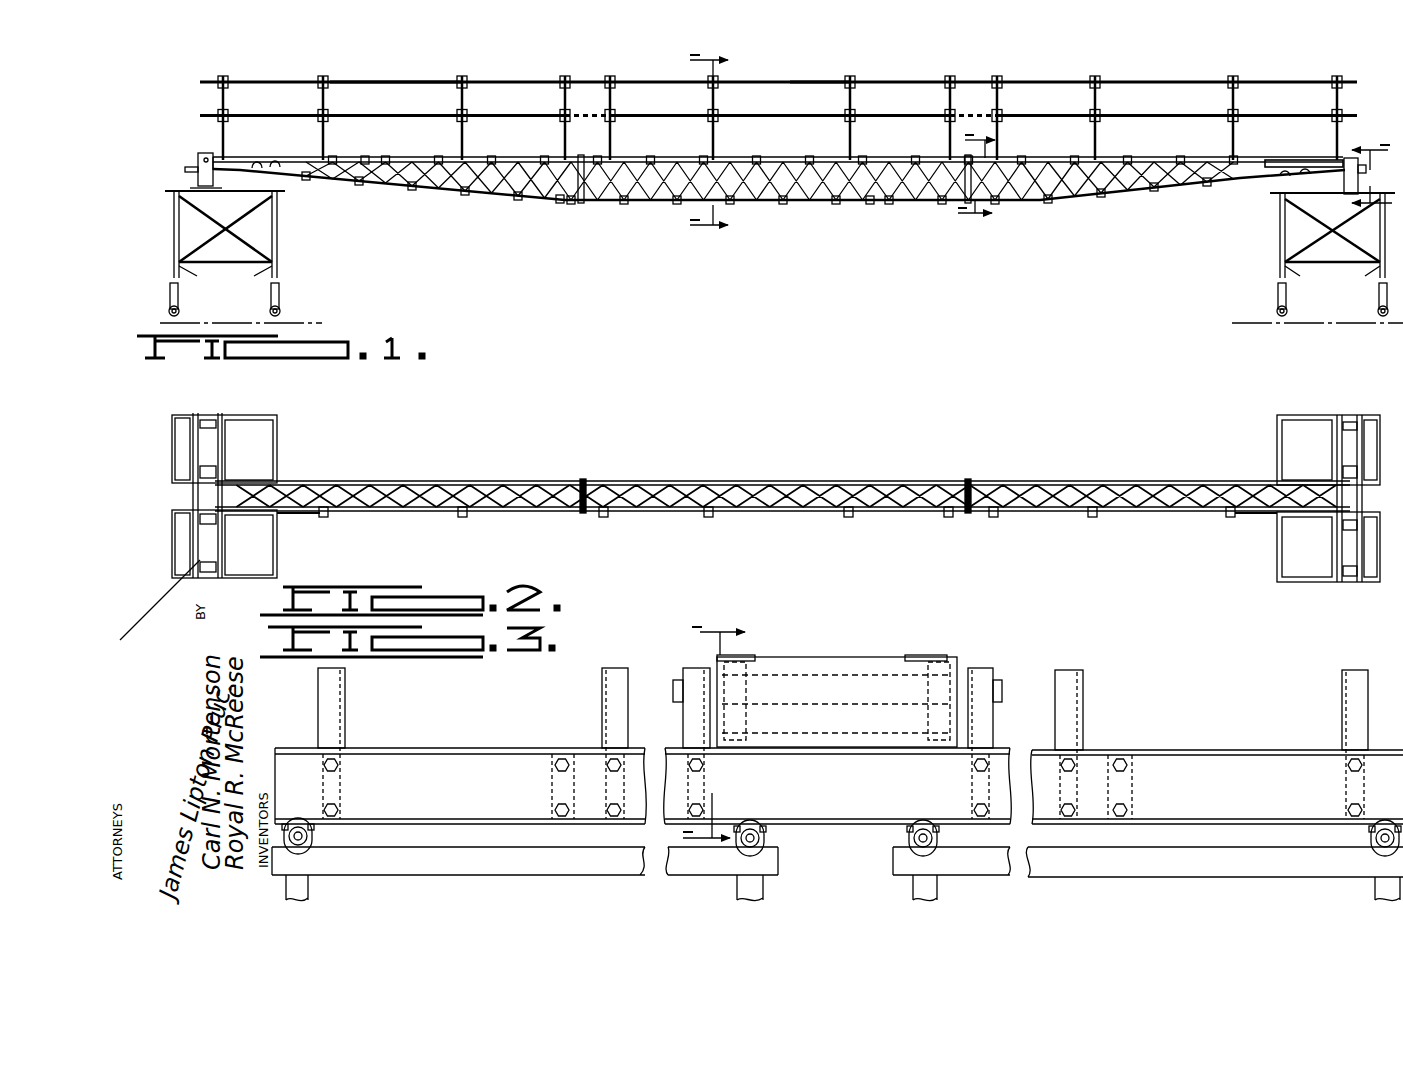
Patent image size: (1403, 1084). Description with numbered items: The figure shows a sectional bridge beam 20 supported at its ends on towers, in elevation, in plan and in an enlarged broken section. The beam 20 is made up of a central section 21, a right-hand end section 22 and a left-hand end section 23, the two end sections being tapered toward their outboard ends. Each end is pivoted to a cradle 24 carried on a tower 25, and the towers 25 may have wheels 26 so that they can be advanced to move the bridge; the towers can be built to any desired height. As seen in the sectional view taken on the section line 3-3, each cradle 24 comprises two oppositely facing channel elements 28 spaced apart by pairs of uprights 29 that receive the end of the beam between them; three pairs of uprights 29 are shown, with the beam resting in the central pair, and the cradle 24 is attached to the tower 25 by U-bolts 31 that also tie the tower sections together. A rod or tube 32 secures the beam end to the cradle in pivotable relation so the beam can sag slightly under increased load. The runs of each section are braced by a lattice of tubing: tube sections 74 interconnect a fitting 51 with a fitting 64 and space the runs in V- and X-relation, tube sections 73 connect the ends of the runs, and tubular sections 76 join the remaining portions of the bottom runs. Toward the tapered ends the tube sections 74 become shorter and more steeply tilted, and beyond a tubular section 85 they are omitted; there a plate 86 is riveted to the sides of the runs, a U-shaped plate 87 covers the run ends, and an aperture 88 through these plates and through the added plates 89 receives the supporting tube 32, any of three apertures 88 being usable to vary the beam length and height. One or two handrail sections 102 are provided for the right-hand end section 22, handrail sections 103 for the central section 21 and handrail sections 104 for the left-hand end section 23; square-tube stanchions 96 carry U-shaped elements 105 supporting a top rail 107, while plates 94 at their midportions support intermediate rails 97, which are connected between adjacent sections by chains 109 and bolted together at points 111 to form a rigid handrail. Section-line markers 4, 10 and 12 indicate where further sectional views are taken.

In FIG. 1, the beam 20 is at (832, 207).
In FIG. 2, the beam 20 is at (690, 463).
In FIG. 1, the central section 21 is at (762, 203).
In FIG. 2, the central section 21 is at (773, 480).
In FIG. 1, the right-hand end section 22 is at (1162, 191).
In FIG. 2, the right-hand end section 22 is at (1090, 480).
In FIG. 1, the left-hand end section 23 is at (408, 186).
In FIG. 2, the left-hand end section 23 is at (506, 479).
In FIG. 1, the cradle 24 is at (200, 161).
In FIG. 2, the cradle 24 is at (192, 457).
In FIG. 3, the cradle 24 is at (1186, 742).
In FIG. 1, the towers 25 is at (280, 234).
In FIG. 2, the towers 25 is at (282, 446).
In FIG. 3, the towers 25 is at (910, 888).
In FIG. 1, the wheels 26 is at (270, 312).
In FIG. 3, the channel elements 28 is at (1240, 767).
In FIG. 2, the uprights 29 is at (1350, 462).
In FIG. 3, the uprights 29 is at (346, 702).
In FIG. 3, the U-bolts 31 is at (765, 828).
In FIG. 3, the rod or tube 32 is at (1002, 682).
In FIG. 1, the fitting 51 is at (560, 204).
In FIG. 1, the fitting 64 is at (368, 155).
In FIG. 2, the tube sections 73 is at (584, 478).
In FIG. 1, the tube sections 74 is at (500, 197).
In FIG. 2, the tubular sections 76 is at (856, 480).
In FIG. 1, the tubular section 85 is at (1258, 160).
In FIG. 1, the plate 86 is at (1266, 181).
In FIG. 2, the plate 86 is at (300, 520).
In FIG. 3, the U-shaped plate 87 is at (862, 665).
In FIG. 1, the aperture 88 is at (1298, 175).
In FIG. 1, the plates 89 is at (1292, 185).
In FIG. 1, the plates 94 is at (563, 119).
In FIG. 1, the stanchions 96 is at (320, 134).
In FIG. 1, the intermediate rails 97 is at (782, 114).
In FIG. 1, the handrail sections 102 is at (1180, 80).
In FIG. 1, the handrail sections 103 is at (826, 80).
In FIG. 1, the handrail sections 104 is at (440, 80).
In FIG. 1, the U-shaped elements 105 is at (228, 78).
In FIG. 1, the top rail 107 is at (365, 80).
In FIG. 1, the chains 109 is at (586, 111).
In FIG. 1, the points 111 is at (322, 90).
In FIG. 1, the section line 3- 3 is at (1357, 170).
In FIG. 3, the section line 4- 4 is at (717, 713).
In FIG. 1, the section line 10- 10 is at (1002, 173).
In FIG. 1, the section line 12- 12 is at (707, 139).